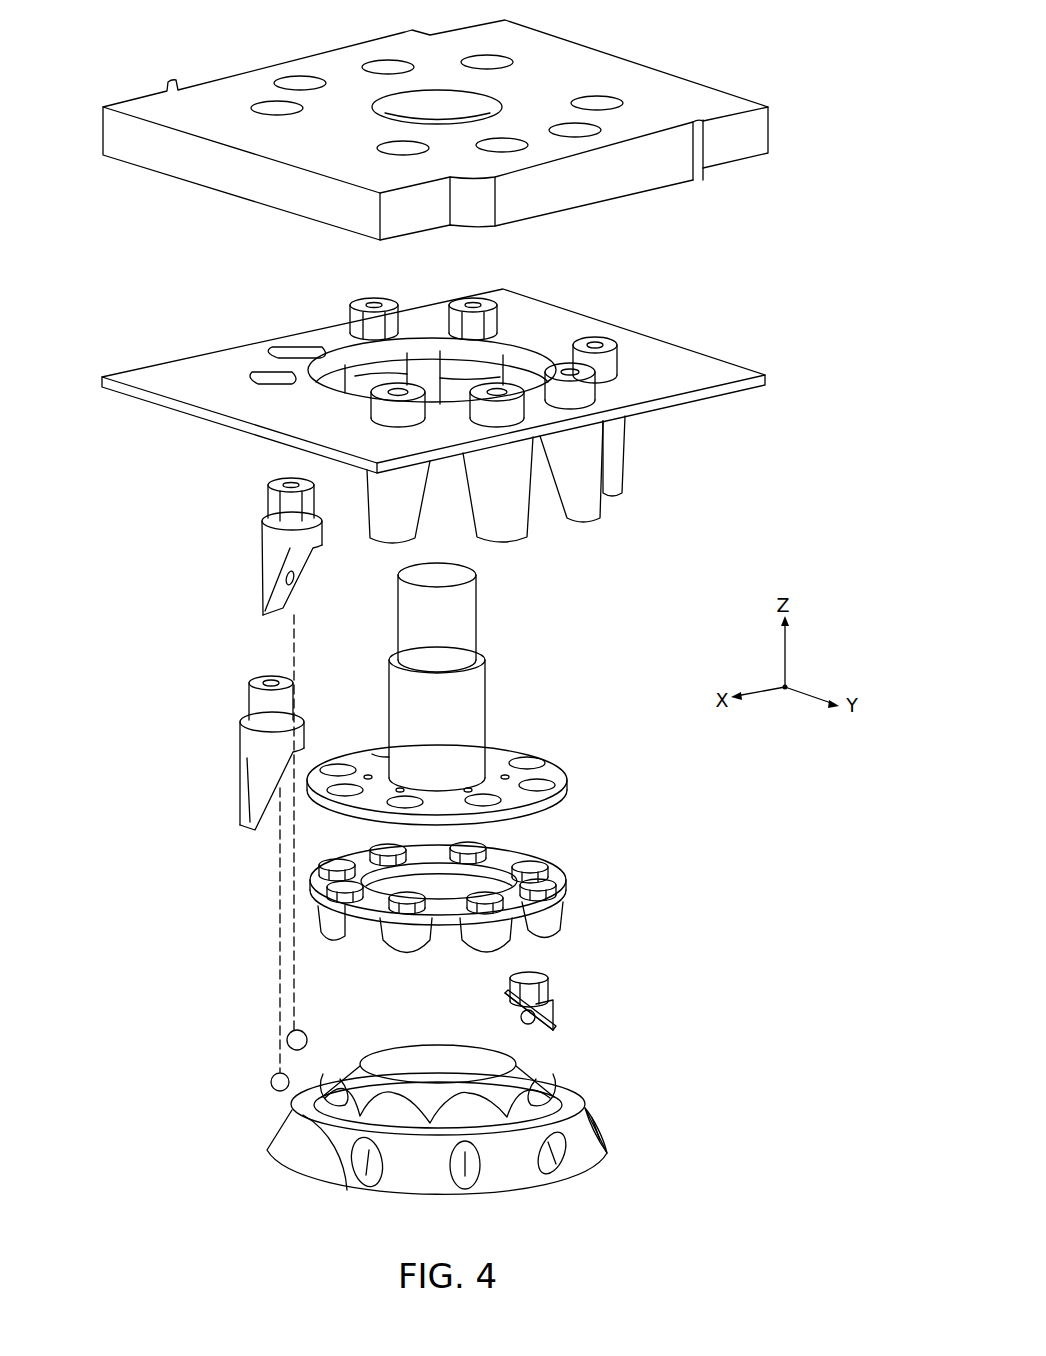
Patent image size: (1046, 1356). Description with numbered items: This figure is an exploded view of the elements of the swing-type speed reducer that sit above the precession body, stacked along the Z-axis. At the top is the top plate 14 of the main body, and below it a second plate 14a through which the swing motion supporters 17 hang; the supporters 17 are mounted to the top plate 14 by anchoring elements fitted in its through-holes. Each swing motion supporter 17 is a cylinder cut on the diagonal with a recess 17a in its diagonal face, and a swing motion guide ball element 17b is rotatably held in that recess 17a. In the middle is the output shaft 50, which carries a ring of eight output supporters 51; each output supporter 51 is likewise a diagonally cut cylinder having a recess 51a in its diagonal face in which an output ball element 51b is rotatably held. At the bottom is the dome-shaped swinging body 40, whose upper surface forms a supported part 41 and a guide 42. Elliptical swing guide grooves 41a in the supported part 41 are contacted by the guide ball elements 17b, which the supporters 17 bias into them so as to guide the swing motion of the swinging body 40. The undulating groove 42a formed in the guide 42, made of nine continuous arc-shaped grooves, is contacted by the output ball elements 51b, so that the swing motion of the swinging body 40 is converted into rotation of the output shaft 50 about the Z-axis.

The top plate 14 is at (203, 97).
The lower plate 14a is at (127, 390).
The swing motion supporter 17 is at (613, 452).
The recess 17a is at (275, 575).
The swing motion guide ball element 17b is at (286, 1040).
The swinging body 40 is at (442, 1136).
The supported part 41 is at (466, 1146).
The swing guide groove 41a is at (565, 1163).
The guide 42 is at (517, 1086).
The undulating groove 42a is at (555, 1085).
The output shaft 50 is at (488, 644).
The output supporter 51 is at (565, 910).
The recess 51a is at (530, 1025).
The output ball element 51b is at (540, 1032).